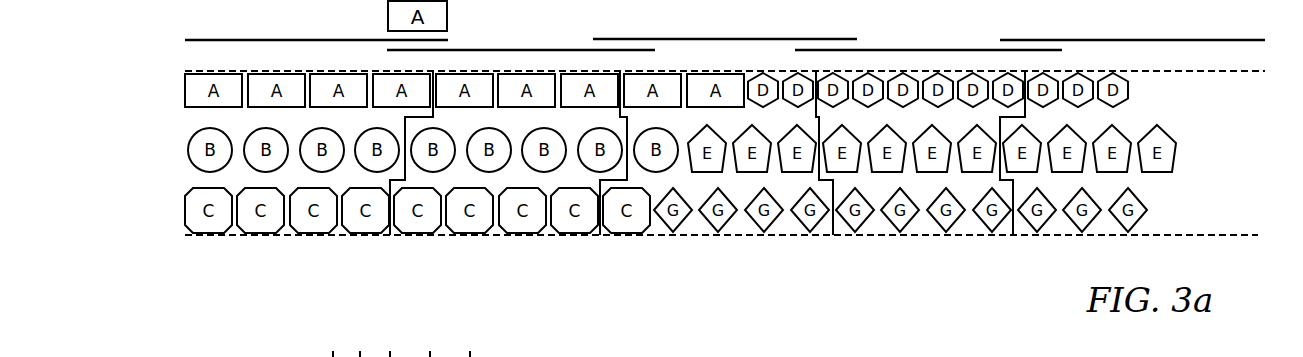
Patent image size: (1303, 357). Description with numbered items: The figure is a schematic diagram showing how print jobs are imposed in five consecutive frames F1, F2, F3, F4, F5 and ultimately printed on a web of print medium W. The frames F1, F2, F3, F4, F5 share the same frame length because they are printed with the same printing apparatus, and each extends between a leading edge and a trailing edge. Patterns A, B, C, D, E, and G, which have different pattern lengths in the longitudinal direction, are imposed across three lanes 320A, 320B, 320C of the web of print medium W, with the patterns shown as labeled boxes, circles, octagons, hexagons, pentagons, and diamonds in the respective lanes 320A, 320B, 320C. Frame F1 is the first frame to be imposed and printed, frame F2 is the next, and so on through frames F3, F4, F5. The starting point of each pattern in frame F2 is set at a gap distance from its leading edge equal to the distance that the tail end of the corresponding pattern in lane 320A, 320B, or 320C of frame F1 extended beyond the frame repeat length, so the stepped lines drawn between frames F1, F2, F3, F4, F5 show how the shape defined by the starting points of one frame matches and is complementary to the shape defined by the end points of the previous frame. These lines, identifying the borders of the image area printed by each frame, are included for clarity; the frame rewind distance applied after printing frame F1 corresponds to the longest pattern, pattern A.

The lane 320A is at (148, 30).
The lane 320B is at (90, 85).
The lane 320C is at (148, 148).
The web of print medium W is at (1252, 135).
The frame F1 is at (316, 21).
The frame F2 is at (521, 30).
The frame F3 is at (725, 20).
The frame F4 is at (928, 31).
The frame F5 is at (1132, 21).